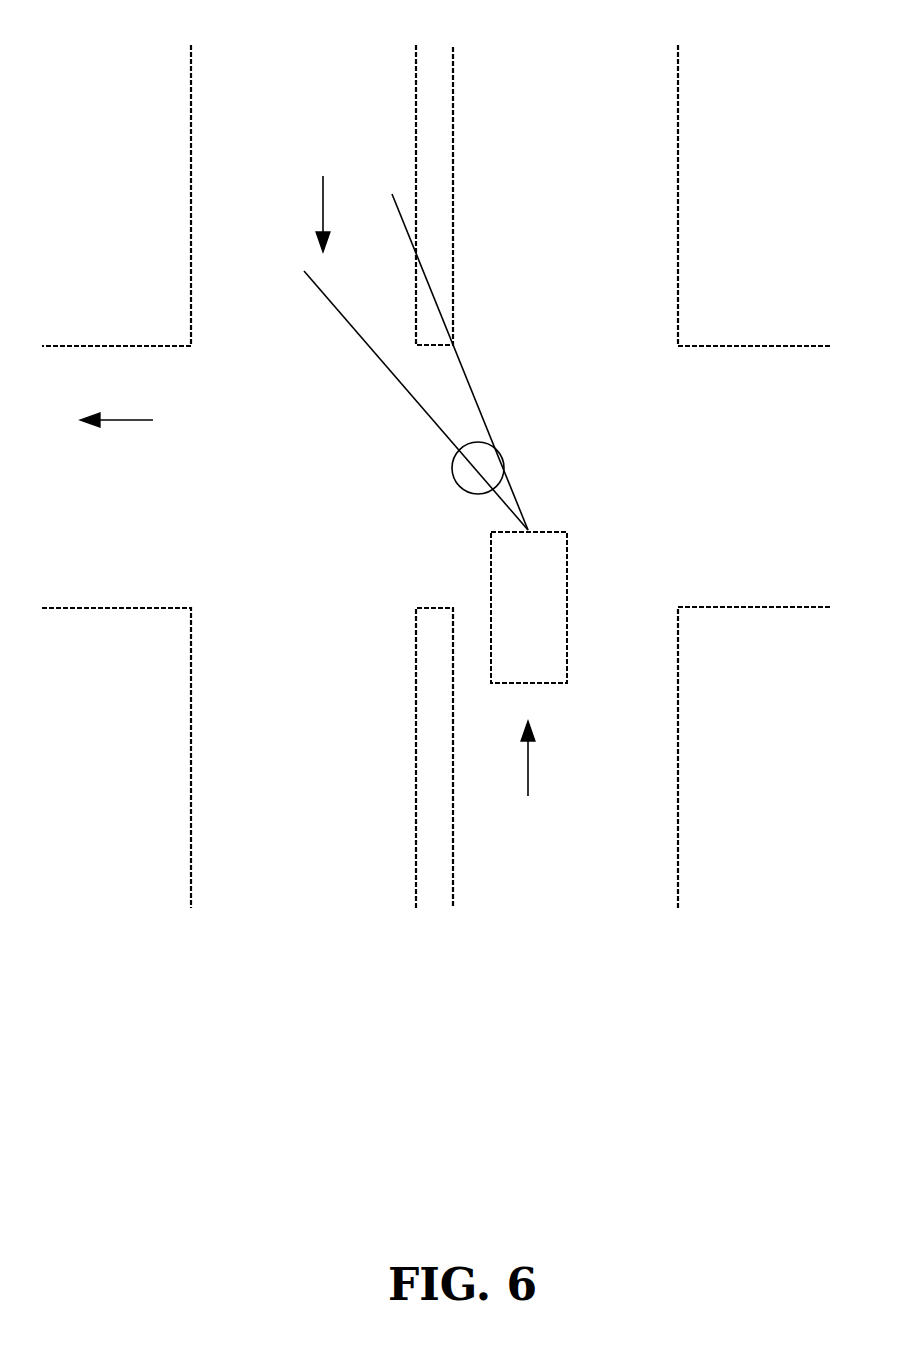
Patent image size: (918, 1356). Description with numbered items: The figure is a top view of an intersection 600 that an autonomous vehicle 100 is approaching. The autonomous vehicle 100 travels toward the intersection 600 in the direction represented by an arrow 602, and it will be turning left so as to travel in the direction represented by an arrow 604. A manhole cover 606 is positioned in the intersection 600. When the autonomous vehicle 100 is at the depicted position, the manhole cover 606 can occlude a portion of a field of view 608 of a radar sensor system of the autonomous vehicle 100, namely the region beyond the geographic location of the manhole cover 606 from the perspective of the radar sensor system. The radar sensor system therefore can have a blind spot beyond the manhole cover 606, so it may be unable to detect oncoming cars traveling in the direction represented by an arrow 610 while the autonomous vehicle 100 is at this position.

The intersection 600 is at (117, 55).
The autonomous vehicle 100 is at (567, 550).
The arrow 602 is at (528, 772).
The arrow 604 is at (120, 420).
The manhole cover 606 is at (460, 486).
The field of view 608 is at (465, 372).
The arrow 610 is at (322, 205).